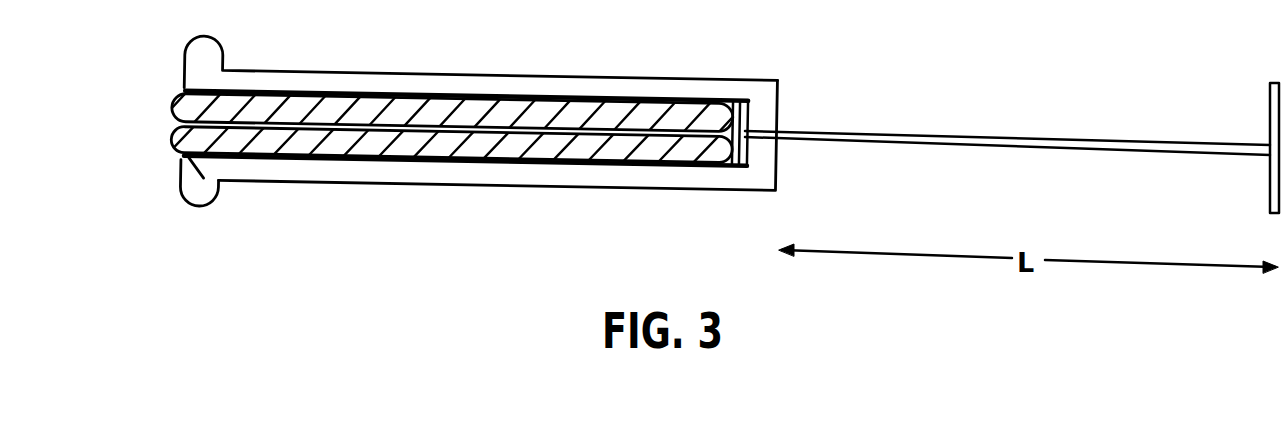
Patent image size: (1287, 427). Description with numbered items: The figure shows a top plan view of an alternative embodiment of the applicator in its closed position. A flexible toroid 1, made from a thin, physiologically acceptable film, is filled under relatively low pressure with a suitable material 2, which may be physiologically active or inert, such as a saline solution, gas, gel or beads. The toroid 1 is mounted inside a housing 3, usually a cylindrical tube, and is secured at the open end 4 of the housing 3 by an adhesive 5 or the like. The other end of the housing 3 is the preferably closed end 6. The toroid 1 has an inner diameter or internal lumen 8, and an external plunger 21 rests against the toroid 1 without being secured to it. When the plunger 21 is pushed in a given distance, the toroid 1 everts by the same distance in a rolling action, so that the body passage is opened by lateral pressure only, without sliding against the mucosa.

The toroid 1 is at (463, 162).
The filling material 2 is at (503, 113).
The housing 3 is at (395, 78).
The open end 4 is at (183, 168).
The adhesive 5 is at (218, 182).
The closed end 6 is at (767, 173).
The internal lumen 8 is at (583, 133).
The external plunger 21 is at (901, 131).